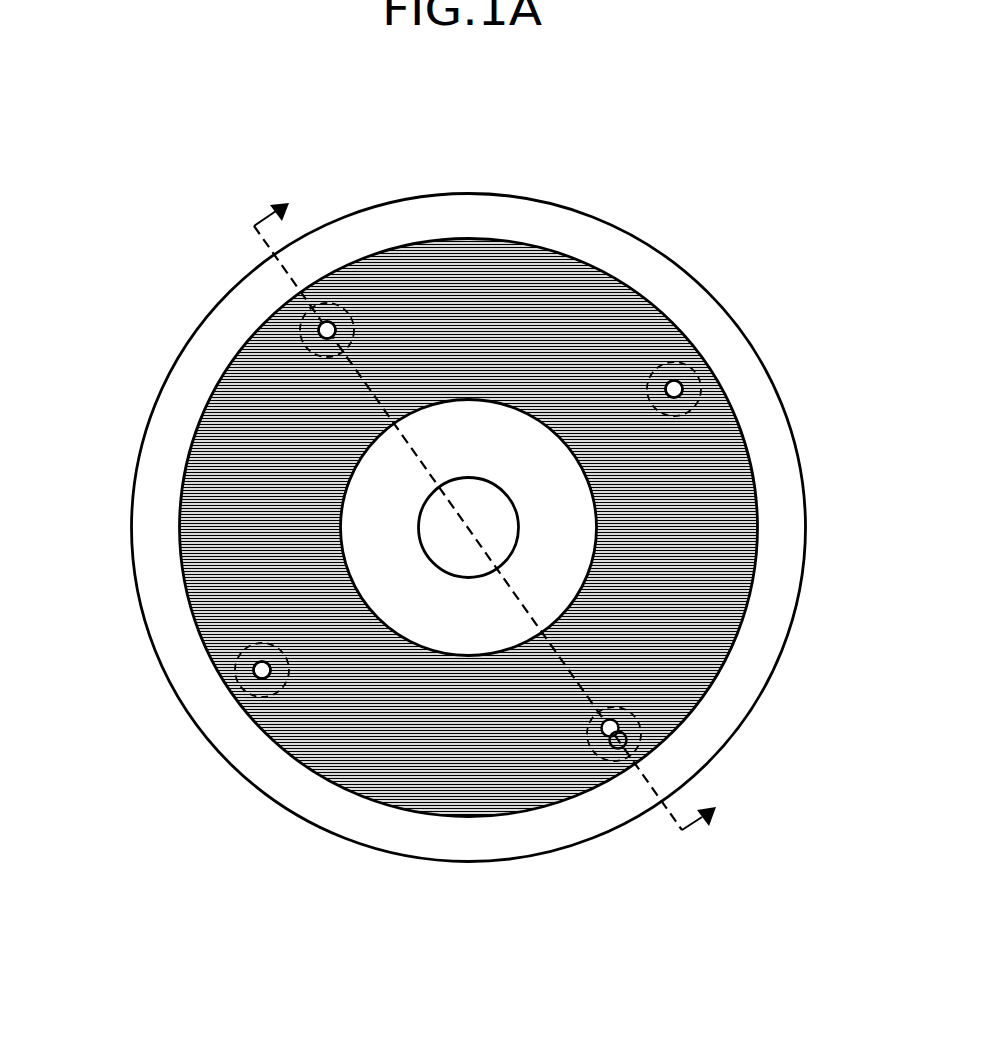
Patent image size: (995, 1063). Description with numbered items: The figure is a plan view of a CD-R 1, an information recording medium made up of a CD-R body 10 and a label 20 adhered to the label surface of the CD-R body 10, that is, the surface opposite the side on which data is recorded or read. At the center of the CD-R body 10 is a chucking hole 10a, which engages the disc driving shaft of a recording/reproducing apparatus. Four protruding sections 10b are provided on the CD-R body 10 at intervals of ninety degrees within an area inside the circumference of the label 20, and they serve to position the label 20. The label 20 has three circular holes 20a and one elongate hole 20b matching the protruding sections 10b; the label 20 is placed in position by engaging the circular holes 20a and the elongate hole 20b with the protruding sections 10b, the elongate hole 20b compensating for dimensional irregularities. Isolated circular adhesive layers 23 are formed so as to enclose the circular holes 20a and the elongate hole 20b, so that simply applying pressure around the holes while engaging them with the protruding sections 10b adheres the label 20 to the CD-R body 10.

The CD-R 1 is at (449, 118).
The CD-R body 10 is at (656, 252).
The chucking hole 10a is at (512, 505).
The protruding sections 10b is at (322, 326).
The label 20 is at (750, 450).
The circular holes 20a is at (318, 332).
The elongate hole 20b is at (612, 735).
The adhesive layers 23 is at (297, 318).